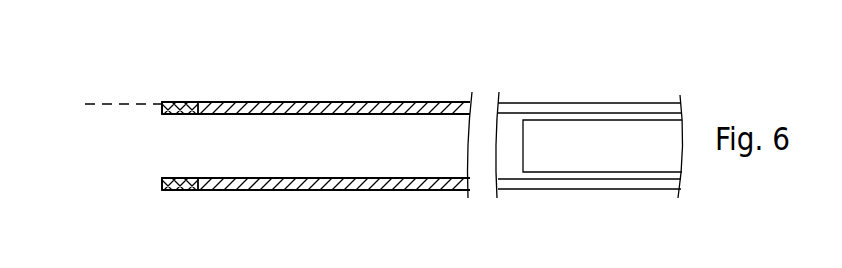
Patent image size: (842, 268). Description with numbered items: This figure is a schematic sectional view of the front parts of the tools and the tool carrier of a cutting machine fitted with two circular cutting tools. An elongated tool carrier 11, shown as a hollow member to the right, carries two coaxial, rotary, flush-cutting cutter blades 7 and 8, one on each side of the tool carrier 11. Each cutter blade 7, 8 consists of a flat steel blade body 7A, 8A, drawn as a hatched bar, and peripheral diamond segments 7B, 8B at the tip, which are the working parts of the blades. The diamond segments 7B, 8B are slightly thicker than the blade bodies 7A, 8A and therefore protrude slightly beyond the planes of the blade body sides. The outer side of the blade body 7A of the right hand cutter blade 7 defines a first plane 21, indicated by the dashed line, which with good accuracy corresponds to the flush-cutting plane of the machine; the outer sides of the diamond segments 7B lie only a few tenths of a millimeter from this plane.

The first plane 21 is at (135, 103).
The cutter blade 7 is at (316, 82).
The blade body 7A is at (303, 101).
The diamond segments 7B is at (184, 101).
The cutter blade 8 is at (316, 207).
The blade body 8A is at (275, 193).
The diamond segments 8B is at (186, 192).
The tool carrier 11 is at (572, 131).